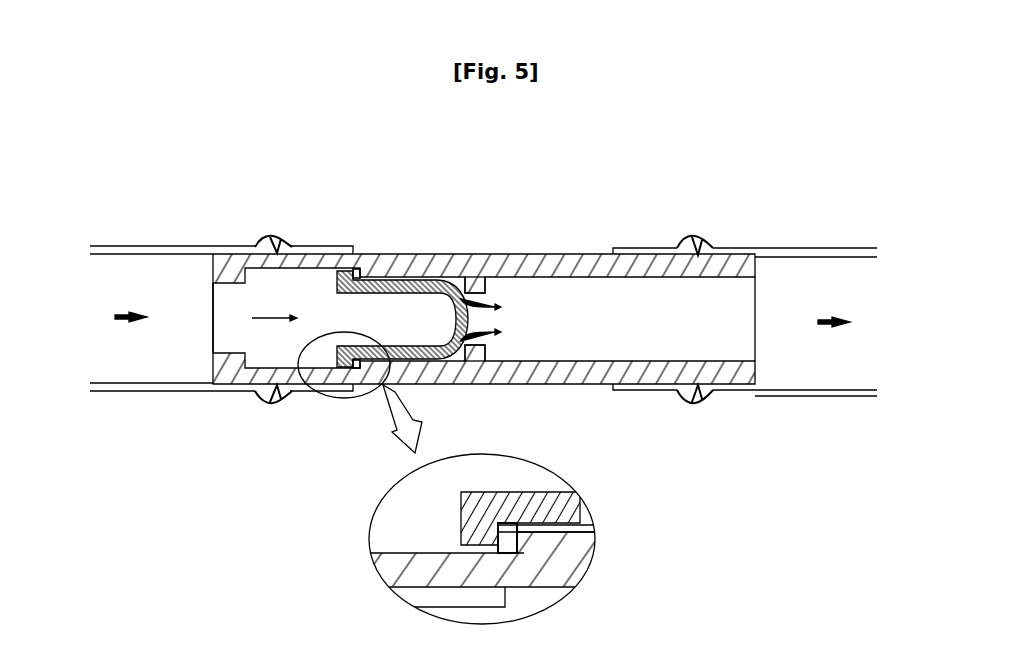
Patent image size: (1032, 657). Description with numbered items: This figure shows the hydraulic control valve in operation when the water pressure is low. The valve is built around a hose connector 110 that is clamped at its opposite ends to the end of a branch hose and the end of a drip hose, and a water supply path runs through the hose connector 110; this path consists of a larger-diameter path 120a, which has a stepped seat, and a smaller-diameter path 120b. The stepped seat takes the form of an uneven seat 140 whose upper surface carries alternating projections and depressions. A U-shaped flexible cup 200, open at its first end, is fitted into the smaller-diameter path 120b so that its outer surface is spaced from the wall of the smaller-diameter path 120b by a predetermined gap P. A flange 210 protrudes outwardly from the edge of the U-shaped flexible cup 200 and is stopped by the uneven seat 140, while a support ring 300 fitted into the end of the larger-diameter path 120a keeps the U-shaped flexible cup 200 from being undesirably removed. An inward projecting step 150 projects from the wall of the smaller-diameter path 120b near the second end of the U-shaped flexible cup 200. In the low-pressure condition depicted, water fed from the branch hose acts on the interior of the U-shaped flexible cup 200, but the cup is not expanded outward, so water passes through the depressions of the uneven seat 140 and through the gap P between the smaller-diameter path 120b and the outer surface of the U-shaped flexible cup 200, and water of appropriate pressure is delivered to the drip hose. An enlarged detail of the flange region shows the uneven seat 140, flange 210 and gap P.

The hose connector 110 is at (410, 567).
The larger-diameter path 120a is at (277, 293).
The smaller-diameter path 120b is at (670, 307).
The uneven seat 140 is at (520, 543).
The inward projecting step 150 is at (476, 290).
The U-shaped flexible cup 200 is at (402, 279).
The flange 210 is at (470, 548).
The support ring 300 is at (213, 385).
The gap P is at (583, 512).